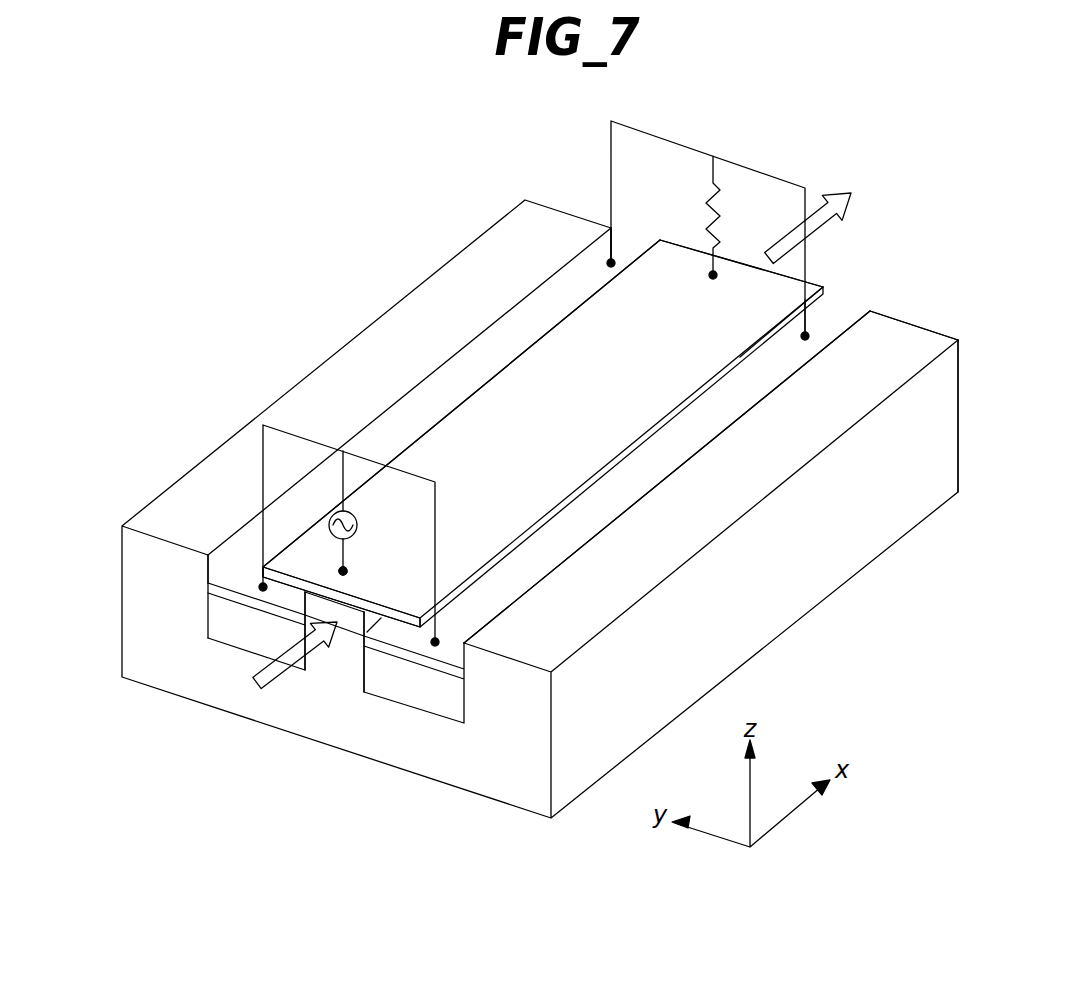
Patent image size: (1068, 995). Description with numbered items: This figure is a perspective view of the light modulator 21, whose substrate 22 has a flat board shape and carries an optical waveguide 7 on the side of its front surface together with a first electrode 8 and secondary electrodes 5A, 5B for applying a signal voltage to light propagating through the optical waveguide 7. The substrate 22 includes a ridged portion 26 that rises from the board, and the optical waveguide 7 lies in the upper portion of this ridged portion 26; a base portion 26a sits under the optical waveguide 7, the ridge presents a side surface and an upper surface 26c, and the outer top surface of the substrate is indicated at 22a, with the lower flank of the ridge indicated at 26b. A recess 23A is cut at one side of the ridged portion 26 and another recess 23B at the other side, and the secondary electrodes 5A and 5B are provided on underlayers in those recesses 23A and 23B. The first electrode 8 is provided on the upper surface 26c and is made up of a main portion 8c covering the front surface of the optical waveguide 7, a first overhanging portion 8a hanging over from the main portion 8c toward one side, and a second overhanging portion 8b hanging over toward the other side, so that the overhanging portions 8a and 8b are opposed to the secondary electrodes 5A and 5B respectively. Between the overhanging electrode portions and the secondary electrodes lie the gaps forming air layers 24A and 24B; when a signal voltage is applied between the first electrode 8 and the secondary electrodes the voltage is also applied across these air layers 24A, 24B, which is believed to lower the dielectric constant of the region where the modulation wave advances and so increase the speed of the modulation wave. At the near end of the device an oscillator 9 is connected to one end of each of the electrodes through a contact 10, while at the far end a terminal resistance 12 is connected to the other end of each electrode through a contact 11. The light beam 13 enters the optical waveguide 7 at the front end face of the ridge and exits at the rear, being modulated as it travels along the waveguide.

The secondary electrode 5A is at (478, 372).
The secondary electrode 5B is at (822, 320).
The optical waveguide 7 is at (354, 617).
The first electrode 8 is at (676, 234).
The first overhanging portion 8a is at (648, 268).
The second overhanging portion 8b is at (760, 323).
The main portion 8c is at (738, 263).
The oscillator 9 is at (357, 511).
The contact 10 is at (255, 588).
The contact 11 is at (712, 276).
The terminal resistance 12 is at (668, 141).
The light beam 13 is at (843, 192).
The light modulator 21 is at (948, 310).
The substrate 22 is at (933, 432).
The top surface of substrate 22a is at (935, 344).
The recess 23A is at (552, 290).
The recess 23B is at (857, 313).
The air layer 24A is at (218, 548).
The air layer 24B is at (502, 582).
The ridged portion 26 is at (361, 601).
The base portion 26a is at (340, 627).
The lower electrode of driving element 26b is at (305, 596).
The upper surface 26c is at (324, 590).